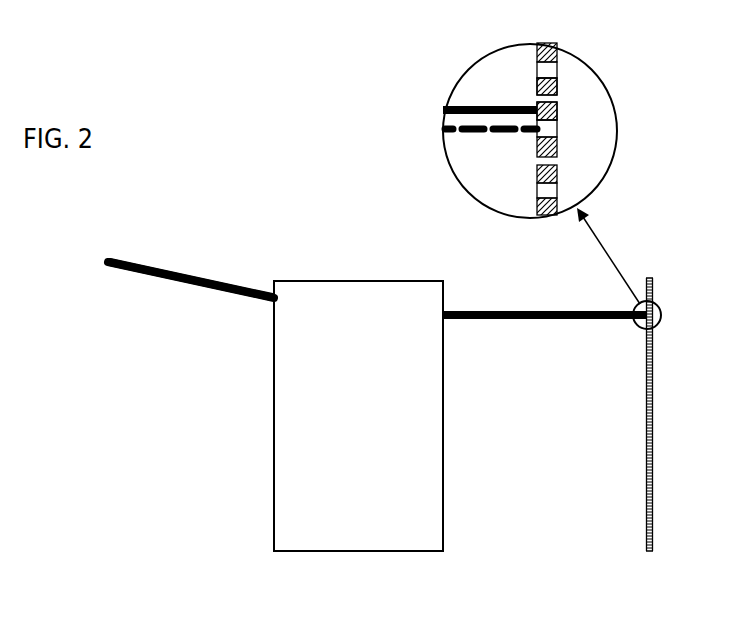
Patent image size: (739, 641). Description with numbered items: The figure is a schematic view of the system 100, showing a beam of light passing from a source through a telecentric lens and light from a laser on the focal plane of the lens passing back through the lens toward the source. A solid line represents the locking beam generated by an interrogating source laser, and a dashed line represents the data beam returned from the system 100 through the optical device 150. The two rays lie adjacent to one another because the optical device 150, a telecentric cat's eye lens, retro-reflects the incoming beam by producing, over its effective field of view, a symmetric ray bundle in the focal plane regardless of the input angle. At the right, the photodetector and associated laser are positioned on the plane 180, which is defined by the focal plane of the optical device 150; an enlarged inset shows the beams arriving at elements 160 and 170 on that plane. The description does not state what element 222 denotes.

The system 100 is at (208, 499).
The optical device 150 is at (377, 371).
The backing segments 160 is at (548, 128).
The spacers 170 is at (557, 108).
The plane 180 is at (632, 499).
The arm 222 is at (150, 0).